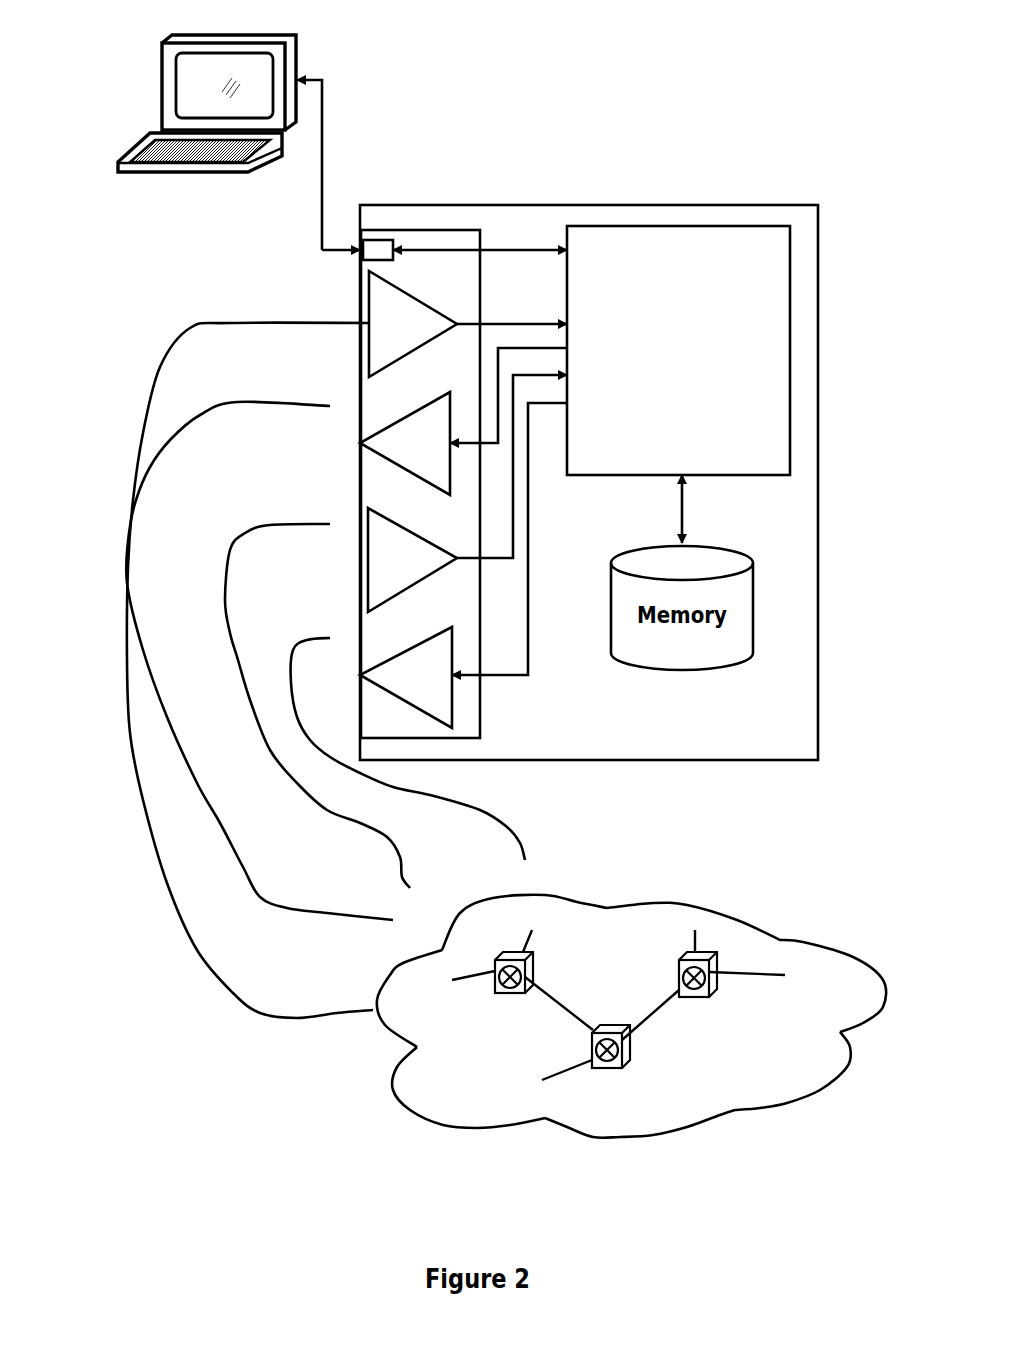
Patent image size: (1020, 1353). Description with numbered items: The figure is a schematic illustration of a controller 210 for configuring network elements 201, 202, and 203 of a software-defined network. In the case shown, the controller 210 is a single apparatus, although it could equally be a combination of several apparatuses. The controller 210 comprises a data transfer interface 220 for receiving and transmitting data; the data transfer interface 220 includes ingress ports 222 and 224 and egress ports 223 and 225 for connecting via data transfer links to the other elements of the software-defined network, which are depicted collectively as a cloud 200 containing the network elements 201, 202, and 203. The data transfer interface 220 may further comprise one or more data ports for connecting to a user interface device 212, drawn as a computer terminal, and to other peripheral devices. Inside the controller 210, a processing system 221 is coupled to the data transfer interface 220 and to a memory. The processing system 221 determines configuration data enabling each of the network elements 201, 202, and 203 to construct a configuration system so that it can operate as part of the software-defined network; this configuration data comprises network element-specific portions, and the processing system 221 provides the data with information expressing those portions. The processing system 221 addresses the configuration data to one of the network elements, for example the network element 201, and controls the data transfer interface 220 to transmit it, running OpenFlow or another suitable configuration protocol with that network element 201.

The cloud 200 is at (487, 1104).
The network element 201 is at (517, 993).
The network element 202 is at (607, 1068).
The network element 203 is at (694, 997).
The controller 210 is at (739, 207).
The user interface device 212 is at (295, 62).
The data transfer interface 220 is at (480, 726).
The processing system 221 is at (697, 356).
The ingress port 222 is at (419, 337).
The egress port 223 is at (436, 454).
The ingress port 224 is at (420, 572).
The egress port 225 is at (438, 689).